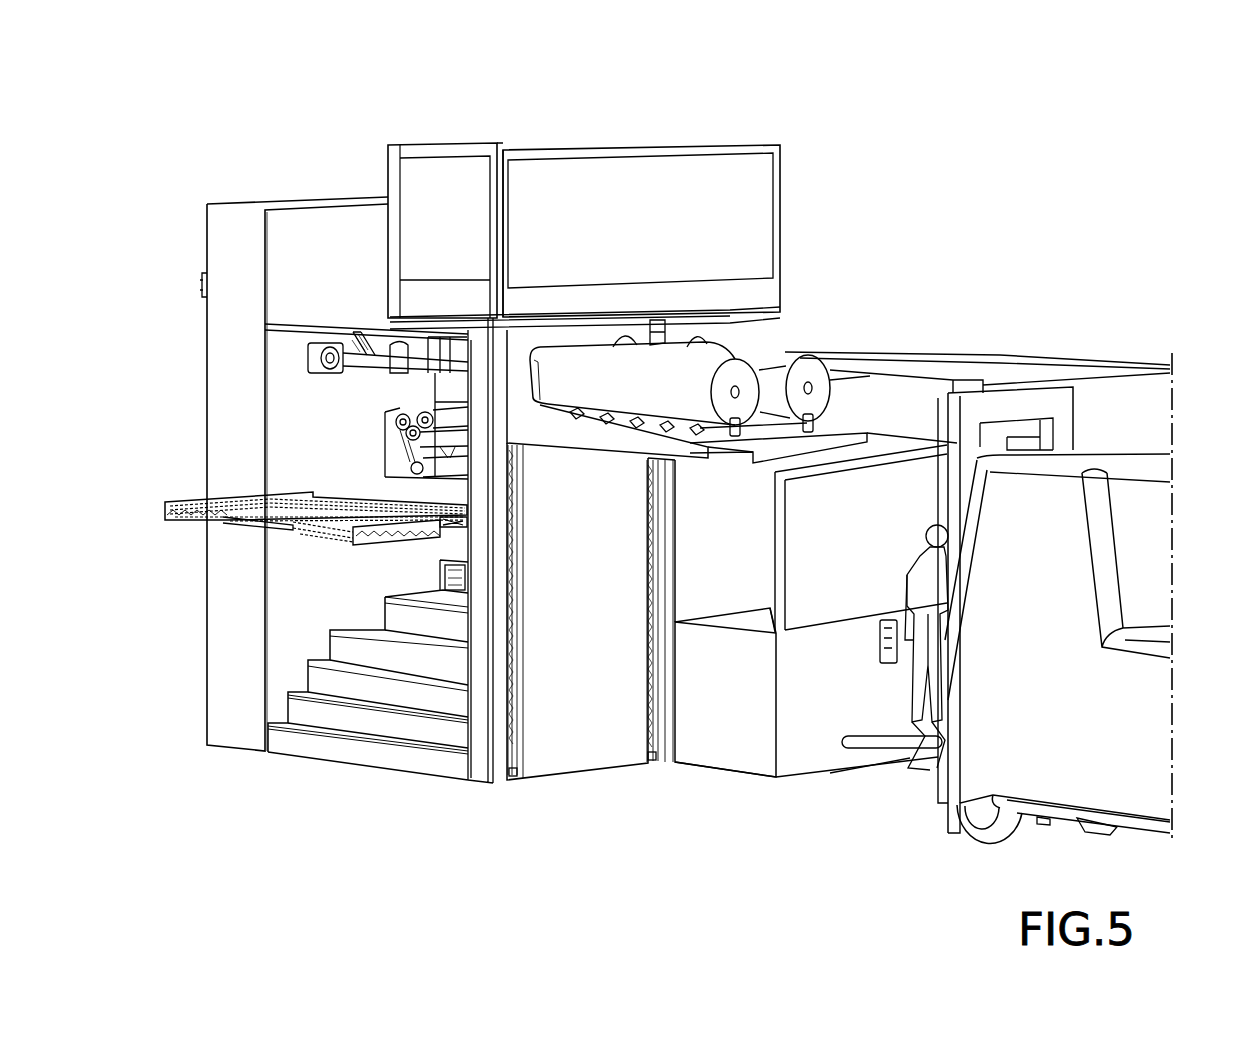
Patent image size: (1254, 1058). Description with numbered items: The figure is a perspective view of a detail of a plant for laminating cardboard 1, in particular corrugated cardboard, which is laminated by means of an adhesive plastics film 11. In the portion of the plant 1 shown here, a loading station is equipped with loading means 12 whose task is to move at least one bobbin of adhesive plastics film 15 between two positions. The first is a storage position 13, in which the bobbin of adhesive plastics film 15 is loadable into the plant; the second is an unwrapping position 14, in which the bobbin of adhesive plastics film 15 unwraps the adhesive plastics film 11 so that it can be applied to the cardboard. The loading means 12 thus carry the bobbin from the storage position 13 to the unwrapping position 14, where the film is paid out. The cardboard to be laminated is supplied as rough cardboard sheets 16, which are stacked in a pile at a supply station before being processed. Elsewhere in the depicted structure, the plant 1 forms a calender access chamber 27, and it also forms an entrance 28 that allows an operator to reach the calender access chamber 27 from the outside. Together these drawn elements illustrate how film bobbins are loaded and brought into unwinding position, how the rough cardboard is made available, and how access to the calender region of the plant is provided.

The plant for laminating cardboard 1 is at (618, 127).
The unwrapping position 14 is at (325, 261).
The adhesive plastics film 11 is at (683, 385).
The bobbin of adhesive plastics film 15 is at (770, 378).
The loading means 12 is at (583, 432).
The rough cardboard sheets 16 is at (590, 611).
The storage position 13 is at (676, 798).
The calender access chamber 27 is at (327, 707).
The entrance 28 is at (407, 724).